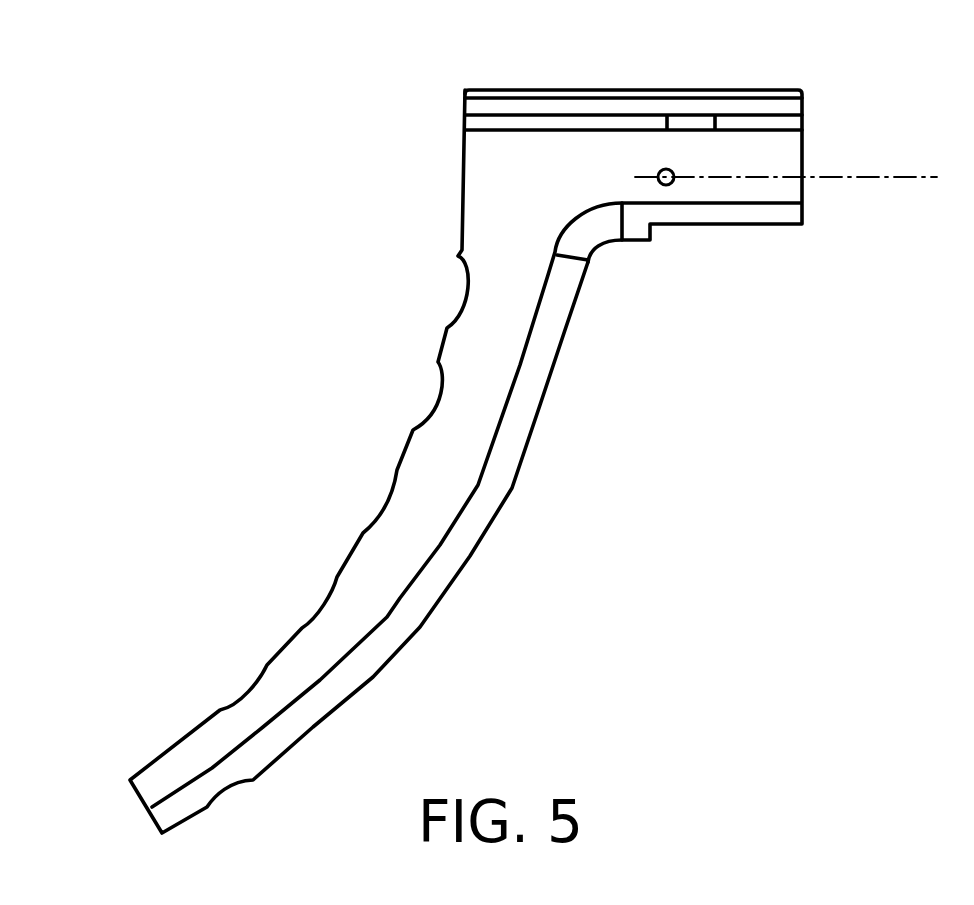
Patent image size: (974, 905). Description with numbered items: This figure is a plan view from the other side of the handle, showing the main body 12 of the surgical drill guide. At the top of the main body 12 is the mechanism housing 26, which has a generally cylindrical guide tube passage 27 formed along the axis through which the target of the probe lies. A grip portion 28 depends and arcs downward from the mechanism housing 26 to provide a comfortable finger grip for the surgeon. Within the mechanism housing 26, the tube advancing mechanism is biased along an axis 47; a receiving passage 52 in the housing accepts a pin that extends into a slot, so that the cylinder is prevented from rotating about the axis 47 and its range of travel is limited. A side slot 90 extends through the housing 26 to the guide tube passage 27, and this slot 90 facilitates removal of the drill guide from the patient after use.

The main body 12 is at (425, 632).
The mechanism housing 26 is at (803, 140).
The guide tube passage 27 is at (462, 122).
The grip portion 28 is at (445, 507).
The axis 47 is at (893, 177).
The receiving passage 52 is at (672, 184).
The side slot 90 is at (510, 122).